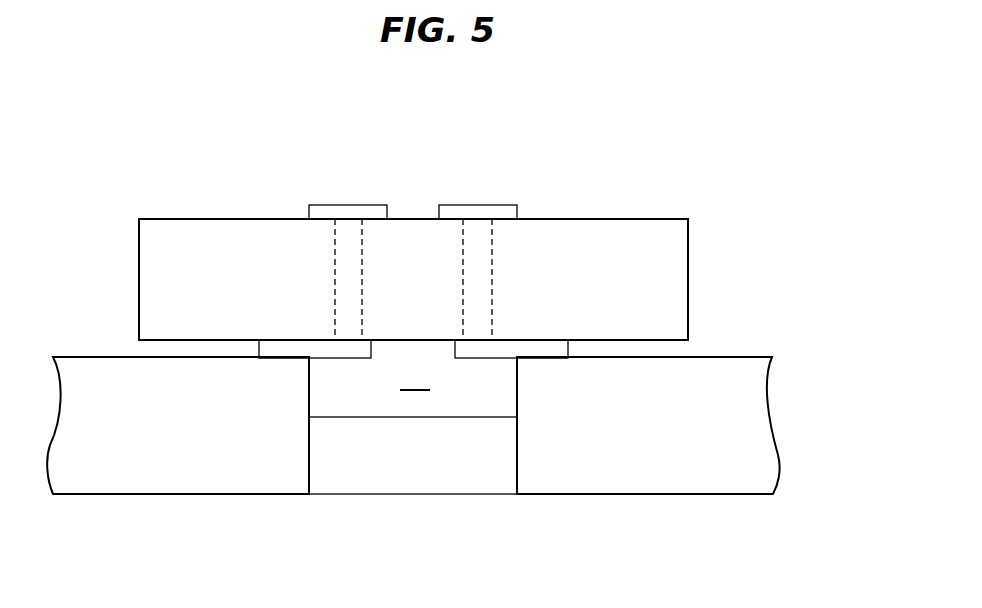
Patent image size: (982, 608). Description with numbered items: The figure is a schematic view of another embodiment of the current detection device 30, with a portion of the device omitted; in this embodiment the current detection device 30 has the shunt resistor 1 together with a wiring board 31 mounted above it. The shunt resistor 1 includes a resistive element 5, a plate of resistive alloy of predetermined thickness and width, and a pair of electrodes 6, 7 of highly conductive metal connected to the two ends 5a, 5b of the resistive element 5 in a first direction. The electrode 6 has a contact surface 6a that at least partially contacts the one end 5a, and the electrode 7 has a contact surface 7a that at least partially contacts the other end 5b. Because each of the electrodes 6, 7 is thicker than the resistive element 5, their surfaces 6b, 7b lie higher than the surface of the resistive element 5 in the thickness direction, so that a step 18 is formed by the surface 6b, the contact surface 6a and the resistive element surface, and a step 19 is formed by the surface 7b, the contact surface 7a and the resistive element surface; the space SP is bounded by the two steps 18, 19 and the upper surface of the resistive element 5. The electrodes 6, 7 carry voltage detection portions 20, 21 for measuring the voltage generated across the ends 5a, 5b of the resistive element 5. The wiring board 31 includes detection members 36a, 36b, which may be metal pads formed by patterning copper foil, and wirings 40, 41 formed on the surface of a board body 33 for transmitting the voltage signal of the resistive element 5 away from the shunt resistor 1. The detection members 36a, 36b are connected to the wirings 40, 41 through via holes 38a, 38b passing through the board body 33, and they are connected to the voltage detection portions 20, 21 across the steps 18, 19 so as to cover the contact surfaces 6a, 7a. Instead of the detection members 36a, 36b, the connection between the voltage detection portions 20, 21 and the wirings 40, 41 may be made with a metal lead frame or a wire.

The shunt resistor 1 is at (793, 512).
The resistive element 5 is at (402, 463).
The one end of the resistive element 5a is at (308, 452).
The other end of the resistive element 5b is at (518, 458).
The electrode 6 is at (167, 463).
The contact surface 6a is at (315, 395).
The surface of the electrode 6b is at (85, 357).
The electrode 7 is at (645, 458).
The contact surface 7a is at (513, 400).
The surface of the electrode 7b is at (705, 357).
The step 18 is at (312, 387).
The step 19 is at (513, 387).
The voltage detection portion 20 is at (300, 355).
The voltage detection portion 21 is at (522, 358).
The current detection device 30 is at (708, 145).
The wiring board 31 is at (688, 237).
The board body 33 is at (688, 260).
The detection member 36a is at (280, 352).
The detection member 36b is at (537, 347).
The via hole 38a is at (335, 292).
The via hole 38b is at (492, 300).
The wiring 40 is at (348, 212).
The wiring 41 is at (476, 213).